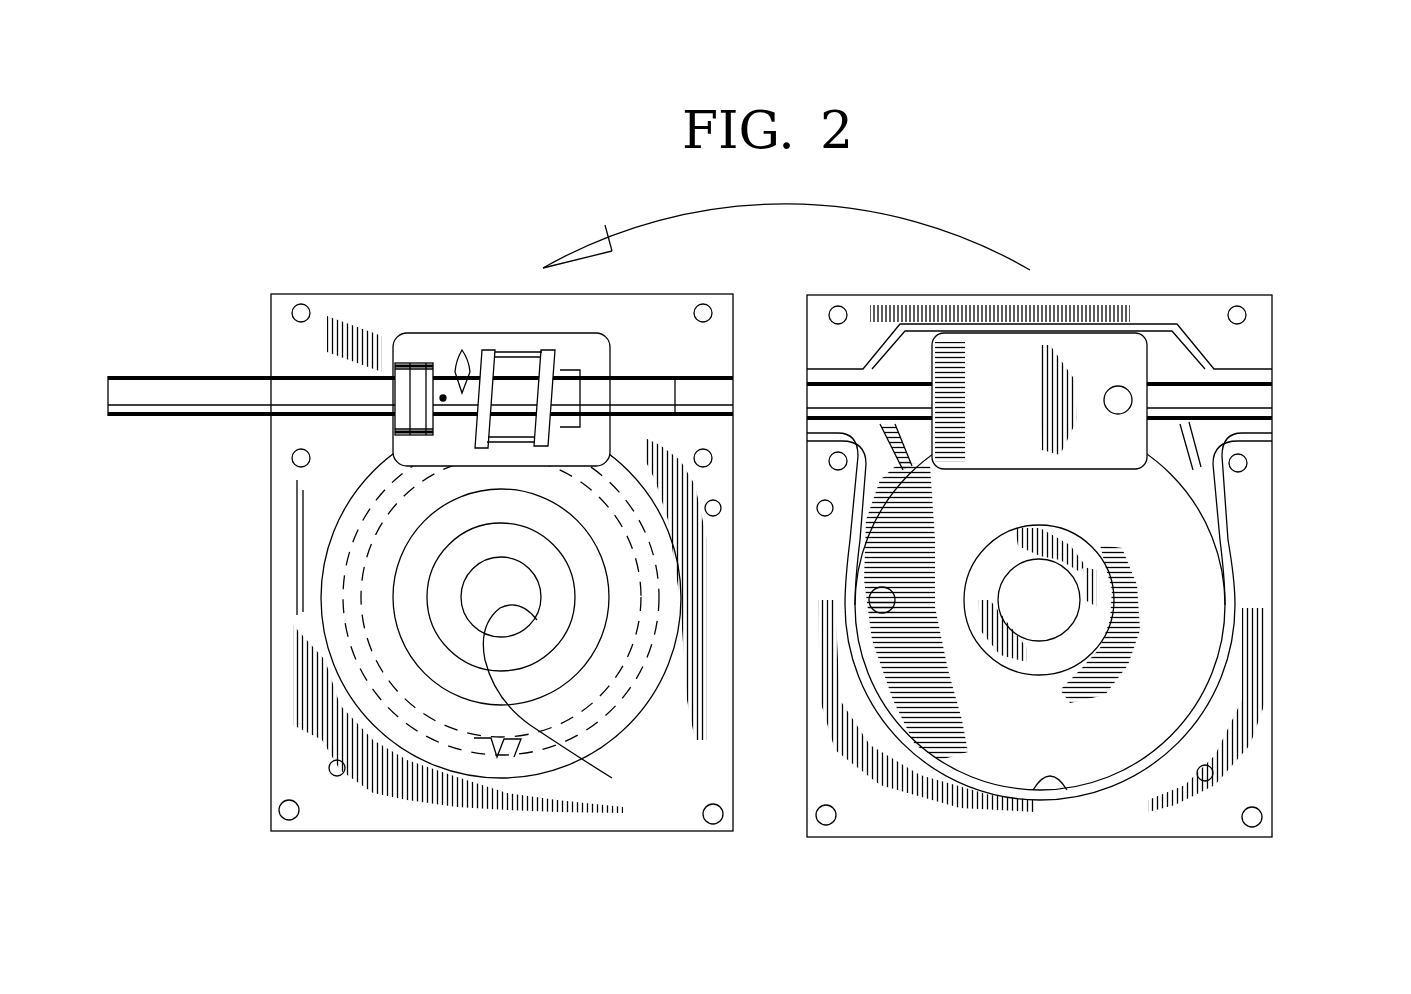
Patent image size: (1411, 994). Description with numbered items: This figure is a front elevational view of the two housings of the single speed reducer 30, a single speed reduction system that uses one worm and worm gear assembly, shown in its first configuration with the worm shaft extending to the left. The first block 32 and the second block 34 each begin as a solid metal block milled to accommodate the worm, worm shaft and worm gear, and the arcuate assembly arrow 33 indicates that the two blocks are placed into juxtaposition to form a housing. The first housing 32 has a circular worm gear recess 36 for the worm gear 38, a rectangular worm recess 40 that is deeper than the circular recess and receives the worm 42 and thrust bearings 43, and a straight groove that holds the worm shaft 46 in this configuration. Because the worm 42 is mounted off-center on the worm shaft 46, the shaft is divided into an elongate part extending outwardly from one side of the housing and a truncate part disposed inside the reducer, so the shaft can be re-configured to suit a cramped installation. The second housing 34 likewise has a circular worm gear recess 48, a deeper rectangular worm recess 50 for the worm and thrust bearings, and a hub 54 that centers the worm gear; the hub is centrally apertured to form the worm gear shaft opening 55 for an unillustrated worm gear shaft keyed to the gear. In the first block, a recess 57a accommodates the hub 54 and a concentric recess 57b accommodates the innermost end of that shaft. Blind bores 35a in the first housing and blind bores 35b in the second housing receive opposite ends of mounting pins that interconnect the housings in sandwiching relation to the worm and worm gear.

The single speed reducer 30 is at (1262, 110).
The first block 32 is at (403, 294).
The arcuate assembly arrow 33 is at (907, 218).
The second block 34 is at (1078, 294).
The blind bores 35a is at (292, 313).
The blind bores 35b is at (840, 305).
The circular worm gear recess 36 is at (328, 610).
The worm gear 38 is at (358, 680).
The rectangular worm recess 40 is at (572, 332).
The worm 42 is at (527, 332).
The thrust bearings 43 is at (395, 338).
The worm shaft 46 is at (148, 365).
The circular worm gear recess 48 is at (1052, 800).
The rectangular worm recess 50 is at (1050, 467).
The hub 54 is at (1002, 552).
The worm gear shaft opening 55 is at (1056, 565).
The recess 57a is at (433, 593).
The recess 57b is at (575, 699).